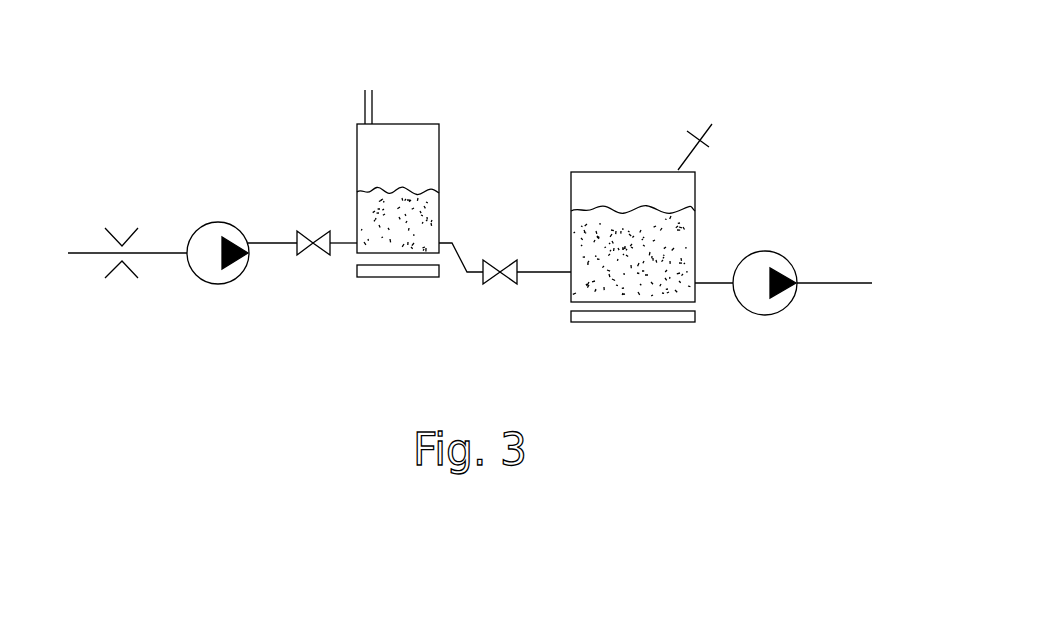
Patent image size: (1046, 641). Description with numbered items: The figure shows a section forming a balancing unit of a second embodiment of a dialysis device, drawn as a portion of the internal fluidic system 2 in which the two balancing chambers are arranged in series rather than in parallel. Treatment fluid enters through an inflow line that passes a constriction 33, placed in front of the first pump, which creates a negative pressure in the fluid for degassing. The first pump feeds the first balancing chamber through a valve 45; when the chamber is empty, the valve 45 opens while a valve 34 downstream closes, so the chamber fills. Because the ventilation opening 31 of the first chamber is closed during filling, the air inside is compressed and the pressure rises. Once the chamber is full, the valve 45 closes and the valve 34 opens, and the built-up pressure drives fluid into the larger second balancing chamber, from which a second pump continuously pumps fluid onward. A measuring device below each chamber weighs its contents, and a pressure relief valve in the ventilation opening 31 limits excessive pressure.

The internal fluidic system 2 is at (782, 90).
The constriction 33 is at (122, 230).
The valve 45 is at (302, 253).
The ventilation opening 31 is at (365, 84).
The valve 34 is at (494, 278).